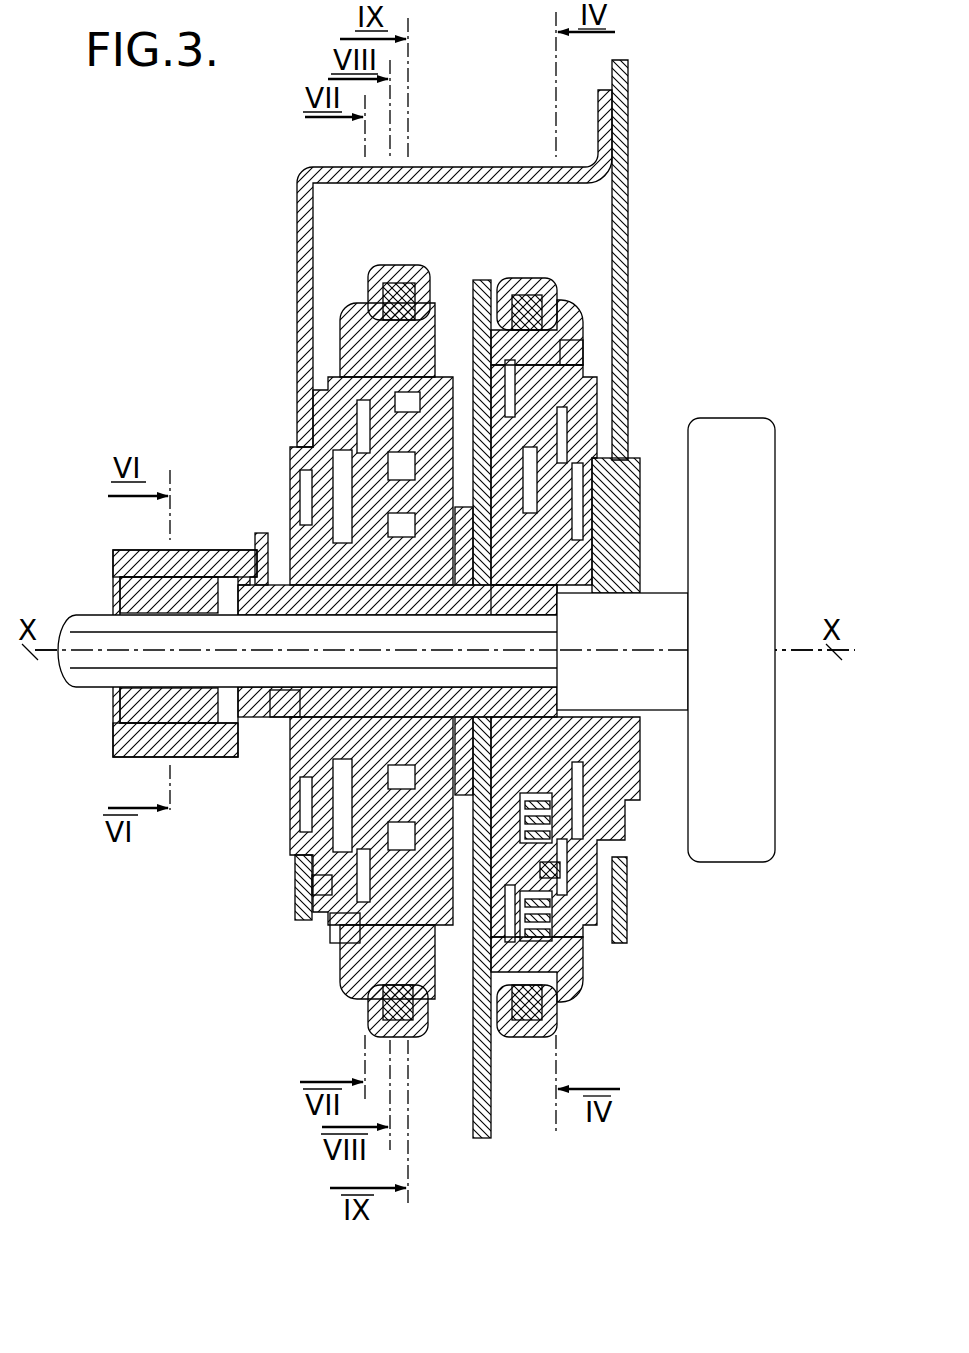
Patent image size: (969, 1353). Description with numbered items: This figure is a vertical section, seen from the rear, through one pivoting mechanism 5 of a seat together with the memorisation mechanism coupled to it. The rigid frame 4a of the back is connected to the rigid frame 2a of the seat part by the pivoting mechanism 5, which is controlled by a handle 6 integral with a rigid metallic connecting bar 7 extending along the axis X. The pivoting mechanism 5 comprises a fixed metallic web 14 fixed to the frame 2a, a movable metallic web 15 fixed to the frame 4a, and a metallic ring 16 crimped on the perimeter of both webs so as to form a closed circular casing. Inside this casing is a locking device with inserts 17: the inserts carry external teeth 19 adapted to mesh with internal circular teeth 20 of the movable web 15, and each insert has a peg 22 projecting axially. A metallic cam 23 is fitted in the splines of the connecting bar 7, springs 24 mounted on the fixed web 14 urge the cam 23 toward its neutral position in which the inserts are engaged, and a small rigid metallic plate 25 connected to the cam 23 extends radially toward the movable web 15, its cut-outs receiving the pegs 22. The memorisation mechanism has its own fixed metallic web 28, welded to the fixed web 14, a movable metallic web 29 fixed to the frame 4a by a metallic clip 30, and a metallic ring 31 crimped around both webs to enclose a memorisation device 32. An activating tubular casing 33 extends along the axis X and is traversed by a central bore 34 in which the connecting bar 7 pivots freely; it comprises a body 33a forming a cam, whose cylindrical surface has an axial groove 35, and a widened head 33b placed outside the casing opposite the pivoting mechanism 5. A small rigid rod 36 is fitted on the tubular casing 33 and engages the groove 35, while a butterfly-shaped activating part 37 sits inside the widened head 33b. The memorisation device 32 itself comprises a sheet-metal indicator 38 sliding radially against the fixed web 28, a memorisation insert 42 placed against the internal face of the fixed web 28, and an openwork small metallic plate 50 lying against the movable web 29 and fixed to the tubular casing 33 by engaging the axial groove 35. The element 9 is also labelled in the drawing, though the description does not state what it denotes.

The rigid frame of the seat part 2a is at (490, 1138).
The rigid frame of the back 4a is at (625, 228).
The pivoting mechanism 5 is at (543, 272).
The handle 6 is at (740, 445).
The connecting bar 7 is at (93, 628).
The nut 9 is at (395, 258).
The fixed metallic web 14 is at (528, 1010).
The movable metallic web 15 is at (575, 388).
The metallic ring 16 is at (530, 290).
The locking device with inserts 17 is at (532, 788).
The external teeth 19 is at (578, 350).
The internal circular teeth 20 is at (557, 968).
The peg 22 is at (560, 500).
The metallic cam 23 is at (557, 580).
The springs 24 is at (548, 870).
The small rigid metallic plate 25 is at (557, 477).
The fixed metallic web 28 is at (432, 987).
The movable metallic web 29 is at (350, 930).
The metallic clip 30 is at (466, 180).
The metallic ring 31 is at (377, 1017).
The memorisation device 32 is at (297, 860).
The activating tubular casing 33 is at (128, 547).
The body forming a cam 33a is at (270, 713).
The widened head 33b is at (188, 555).
The central bore 34 is at (297, 697).
The axial groove 35 is at (285, 583).
The small rigid rod 36 is at (262, 533).
The activating part 37 is at (157, 705).
The indicator 38 is at (415, 403).
The memorisation insert 42 is at (393, 792).
The openwork small metallic plate 50 is at (343, 882).